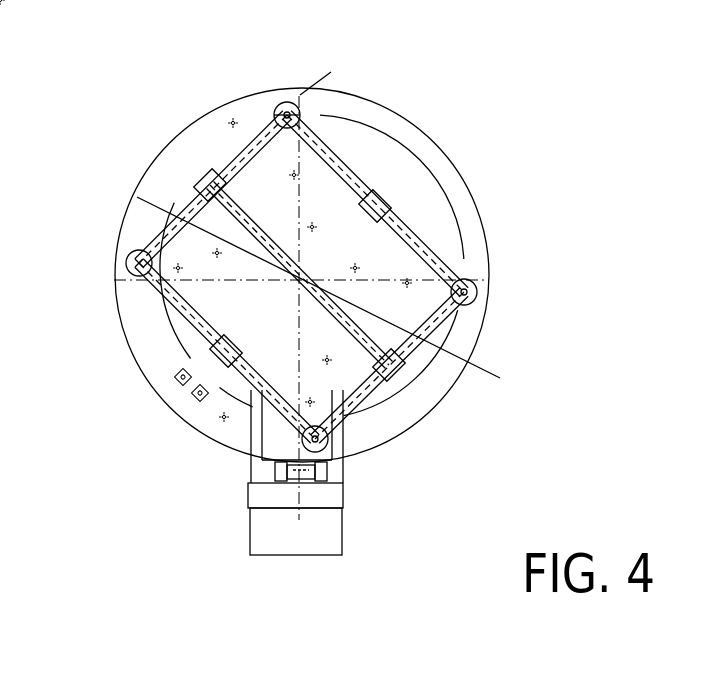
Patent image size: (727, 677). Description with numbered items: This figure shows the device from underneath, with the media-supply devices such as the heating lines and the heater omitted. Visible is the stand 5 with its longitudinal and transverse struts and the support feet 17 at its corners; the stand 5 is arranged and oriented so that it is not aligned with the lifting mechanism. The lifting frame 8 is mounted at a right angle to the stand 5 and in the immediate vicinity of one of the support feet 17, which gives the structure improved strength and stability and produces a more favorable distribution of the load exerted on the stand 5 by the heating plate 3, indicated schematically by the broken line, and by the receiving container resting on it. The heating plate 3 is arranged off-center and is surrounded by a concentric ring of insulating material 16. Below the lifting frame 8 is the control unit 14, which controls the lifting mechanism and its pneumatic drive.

The ring of insulating material 16 is at (173, 167).
The heating plate 3 is at (372, 148).
The stand 5 is at (417, 242).
The support feet 17 is at (134, 257).
The lifting frame 8 is at (330, 495).
The control unit 14 is at (268, 537).